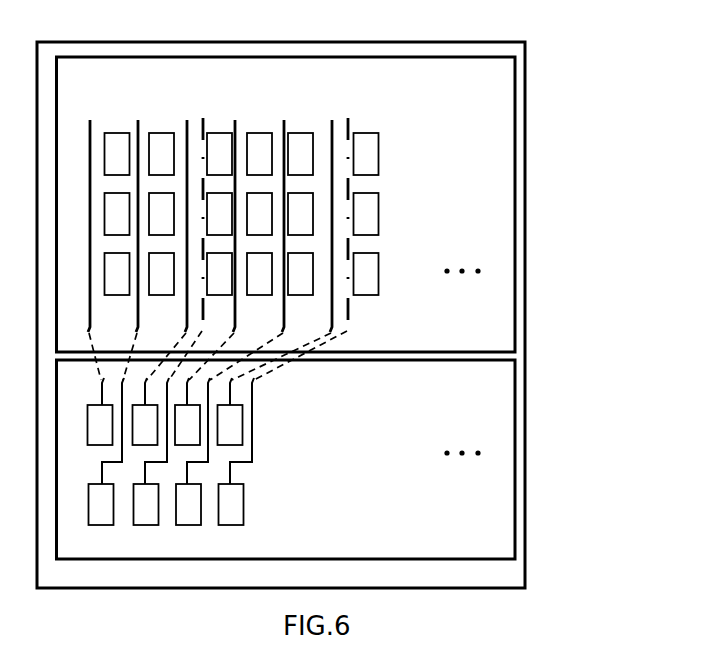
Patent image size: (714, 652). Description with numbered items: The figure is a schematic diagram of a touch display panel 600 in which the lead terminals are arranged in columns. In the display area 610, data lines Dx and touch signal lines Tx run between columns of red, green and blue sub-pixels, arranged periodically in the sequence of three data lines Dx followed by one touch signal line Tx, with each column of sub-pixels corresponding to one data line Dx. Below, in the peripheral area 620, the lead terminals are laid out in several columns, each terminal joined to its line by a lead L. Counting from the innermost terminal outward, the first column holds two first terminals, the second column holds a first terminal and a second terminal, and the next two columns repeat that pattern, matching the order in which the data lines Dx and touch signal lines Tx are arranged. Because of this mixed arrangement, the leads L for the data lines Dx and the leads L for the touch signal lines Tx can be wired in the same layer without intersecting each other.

The touch display panel 600 is at (438, 42).
The display area 610 is at (515, 128).
The peripheral area 620 is at (515, 398).
The data line Dx is at (90, 120).
The touch signal line Tx is at (203, 120).
The lead L is at (252, 436).